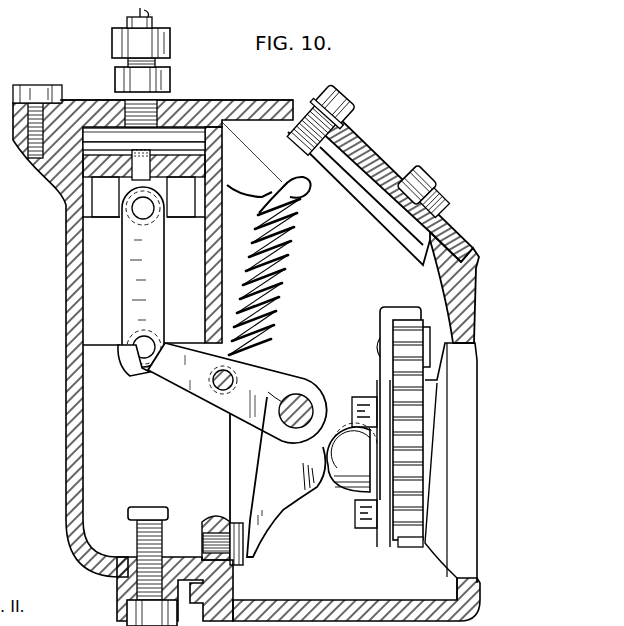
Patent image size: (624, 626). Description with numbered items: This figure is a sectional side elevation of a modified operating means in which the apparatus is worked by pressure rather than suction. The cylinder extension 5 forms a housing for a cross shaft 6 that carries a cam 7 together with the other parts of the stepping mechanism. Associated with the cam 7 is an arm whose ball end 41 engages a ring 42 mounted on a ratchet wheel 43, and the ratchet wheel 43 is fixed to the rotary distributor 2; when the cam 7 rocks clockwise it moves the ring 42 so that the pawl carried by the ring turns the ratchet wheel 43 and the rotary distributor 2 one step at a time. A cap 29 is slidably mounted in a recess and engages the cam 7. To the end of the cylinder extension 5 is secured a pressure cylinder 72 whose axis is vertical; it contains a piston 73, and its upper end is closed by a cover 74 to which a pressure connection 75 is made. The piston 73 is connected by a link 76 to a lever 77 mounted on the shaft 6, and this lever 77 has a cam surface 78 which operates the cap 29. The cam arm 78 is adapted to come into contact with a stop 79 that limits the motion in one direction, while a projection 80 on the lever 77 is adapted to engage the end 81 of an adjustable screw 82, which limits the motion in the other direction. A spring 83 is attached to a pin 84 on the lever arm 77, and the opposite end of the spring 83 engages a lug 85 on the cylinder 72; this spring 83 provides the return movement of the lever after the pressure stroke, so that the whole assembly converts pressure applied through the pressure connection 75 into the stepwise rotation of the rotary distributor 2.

The rotary distributor 2 is at (460, 375).
The cylinder extension 5 is at (470, 275).
The cross shaft 6 is at (283, 417).
The cam 7 is at (322, 477).
The cap 29 is at (352, 470).
The ball end 41 is at (333, 417).
The ring 42 is at (387, 320).
The ratchet wheel 43 is at (413, 473).
The pressure cylinder 72 is at (73, 291).
The piston 73 is at (175, 155).
The cover 74 is at (87, 112).
The pressure connection 75 is at (165, 50).
The link 76 is at (143, 277).
The lever 77 is at (190, 370).
The cam surface 78 is at (260, 521).
The stop 79 is at (241, 565).
The projection 80 is at (129, 364).
The end of adjustable screw 81 is at (147, 507).
The adjustable screw 82 is at (122, 583).
The spring 83 is at (274, 297).
The pin 84 is at (237, 382).
The lug 85 is at (300, 188).